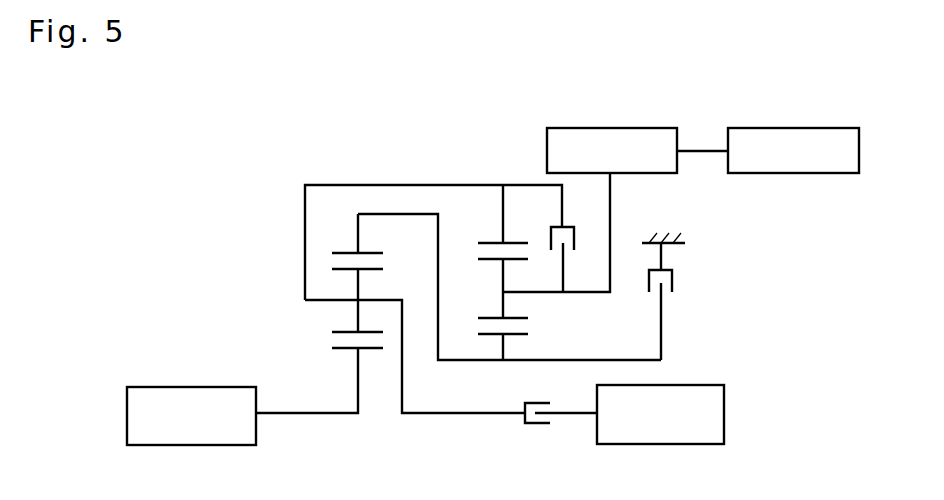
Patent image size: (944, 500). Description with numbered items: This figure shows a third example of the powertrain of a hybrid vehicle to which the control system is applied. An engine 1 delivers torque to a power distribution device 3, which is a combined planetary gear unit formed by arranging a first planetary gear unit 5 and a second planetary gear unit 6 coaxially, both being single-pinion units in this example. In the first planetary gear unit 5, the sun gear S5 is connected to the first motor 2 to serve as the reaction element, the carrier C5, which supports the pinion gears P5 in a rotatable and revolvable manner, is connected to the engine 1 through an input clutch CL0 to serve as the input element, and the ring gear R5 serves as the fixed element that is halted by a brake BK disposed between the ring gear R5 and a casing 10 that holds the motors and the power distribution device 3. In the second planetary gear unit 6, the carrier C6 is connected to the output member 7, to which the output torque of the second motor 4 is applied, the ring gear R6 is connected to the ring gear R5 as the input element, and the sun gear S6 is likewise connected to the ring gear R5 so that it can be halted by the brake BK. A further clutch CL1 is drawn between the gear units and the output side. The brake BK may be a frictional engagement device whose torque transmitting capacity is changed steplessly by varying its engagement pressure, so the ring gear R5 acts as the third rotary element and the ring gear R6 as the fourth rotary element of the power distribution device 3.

The engine 1 is at (724, 414).
The first motor 2 is at (187, 447).
The power distribution device 3 is at (265, 172).
The second motor 4 is at (798, 128).
The first planetary gear unit 5 is at (338, 388).
The second planetary gear unit 6 is at (480, 380).
The output member 7 is at (617, 128).
The casing 10 is at (675, 236).
The ring gear R5 is at (350, 253).
The carrier C5 is at (325, 300).
The pinion gears P5 is at (332, 332).
The sun gear S5 is at (372, 350).
The ring gear R6 is at (490, 243).
The carrier C6 is at (520, 292).
The sun gear S6 is at (488, 336).
The input clutch CL0 is at (547, 403).
The clutch CL1 is at (574, 240).
The brake BK is at (649, 270).